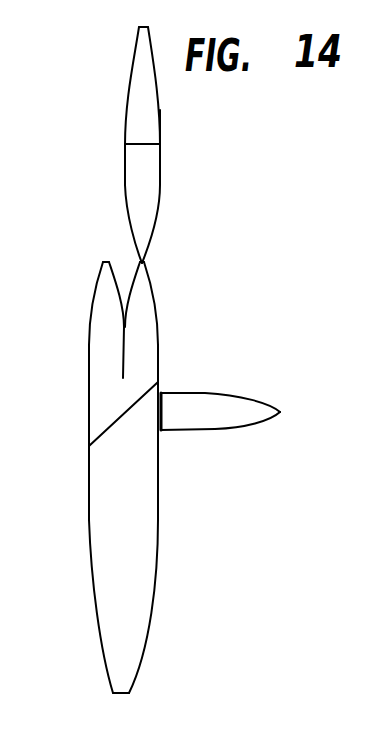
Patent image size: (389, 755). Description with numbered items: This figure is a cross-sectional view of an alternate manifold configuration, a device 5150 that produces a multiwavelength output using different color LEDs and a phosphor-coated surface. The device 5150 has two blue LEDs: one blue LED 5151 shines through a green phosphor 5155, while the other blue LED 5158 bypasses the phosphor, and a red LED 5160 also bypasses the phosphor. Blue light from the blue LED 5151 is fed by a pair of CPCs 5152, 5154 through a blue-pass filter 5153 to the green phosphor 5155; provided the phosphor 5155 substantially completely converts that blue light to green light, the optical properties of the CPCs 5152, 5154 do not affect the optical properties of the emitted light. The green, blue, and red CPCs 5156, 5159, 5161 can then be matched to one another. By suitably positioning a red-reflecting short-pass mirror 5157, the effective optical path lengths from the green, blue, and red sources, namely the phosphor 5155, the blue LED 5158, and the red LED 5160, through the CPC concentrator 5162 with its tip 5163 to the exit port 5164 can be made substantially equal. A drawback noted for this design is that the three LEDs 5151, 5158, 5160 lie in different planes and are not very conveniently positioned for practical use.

The device 5150 is at (222, 653).
The blue LED 5151 is at (133, 27).
The CPC 5152 is at (165, 125).
The blue-pass filter 5153 is at (125, 144).
The CPC 5154 is at (165, 193).
The green phosphor 5155 is at (149, 262).
The green CPC 5156 is at (160, 328).
The red-reflecting short-pass mirror 5157 is at (108, 432).
The blue LED 5158 is at (106, 258).
The blue CPC 5159 is at (86, 338).
The red LED 5160 is at (281, 413).
The red CPC 5161 is at (217, 432).
The CPC concentrator 5162 is at (156, 579).
The tip 5163 is at (140, 674).
The exit port 5164 is at (123, 696).